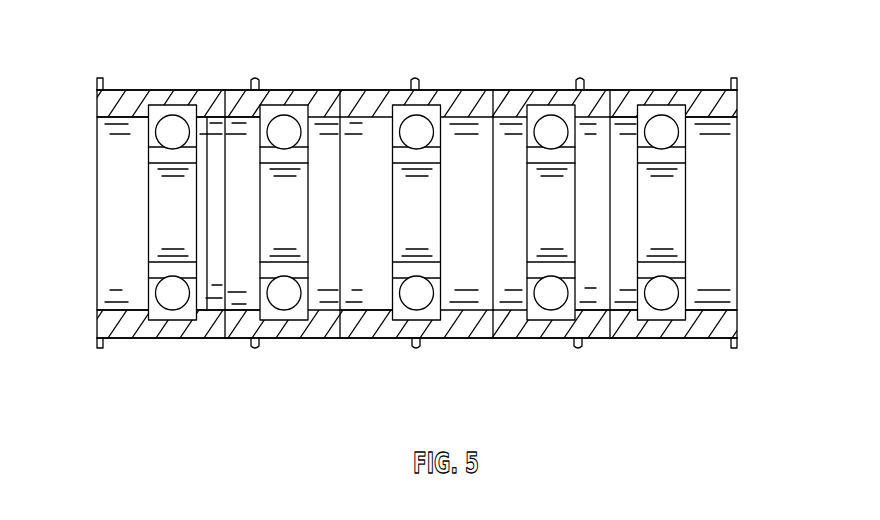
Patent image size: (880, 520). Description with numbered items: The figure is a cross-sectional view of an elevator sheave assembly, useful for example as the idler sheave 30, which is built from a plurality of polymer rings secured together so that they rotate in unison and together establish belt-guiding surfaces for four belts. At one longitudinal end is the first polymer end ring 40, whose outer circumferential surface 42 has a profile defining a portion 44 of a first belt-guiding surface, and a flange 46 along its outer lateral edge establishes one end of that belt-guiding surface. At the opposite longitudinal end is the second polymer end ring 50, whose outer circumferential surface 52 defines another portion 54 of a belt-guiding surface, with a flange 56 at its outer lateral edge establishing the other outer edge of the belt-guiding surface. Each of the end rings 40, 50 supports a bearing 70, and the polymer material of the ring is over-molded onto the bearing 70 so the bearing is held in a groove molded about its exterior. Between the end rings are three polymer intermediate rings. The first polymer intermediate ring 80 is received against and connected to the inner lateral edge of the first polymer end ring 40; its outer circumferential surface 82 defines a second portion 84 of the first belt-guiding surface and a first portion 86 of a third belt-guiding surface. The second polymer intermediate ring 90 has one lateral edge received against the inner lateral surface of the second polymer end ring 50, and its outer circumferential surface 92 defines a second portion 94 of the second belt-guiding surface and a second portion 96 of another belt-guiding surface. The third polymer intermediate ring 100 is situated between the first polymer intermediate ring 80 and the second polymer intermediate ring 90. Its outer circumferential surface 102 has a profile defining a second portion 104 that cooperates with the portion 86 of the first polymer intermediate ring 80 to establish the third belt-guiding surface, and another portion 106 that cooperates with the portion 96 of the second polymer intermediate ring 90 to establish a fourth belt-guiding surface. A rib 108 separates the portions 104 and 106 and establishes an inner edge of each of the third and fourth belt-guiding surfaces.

The idler sheave 30 is at (94, 22).
The first polymer end ring 40 is at (94, 269).
The outer circumferential surface 42 is at (130, 342).
The portion of belt-guiding surface 44 is at (150, 90).
The flange 46 is at (97, 80).
The second polymer end ring 50 is at (743, 157).
The outer circumferential surface 52 is at (687, 341).
The portion of belt-guiding surface 54 is at (685, 90).
The flange 56 is at (736, 342).
The bearing 70 is at (413, 309).
The first polymer intermediate ring 80 is at (247, 313).
The outer circumferential surface 82 is at (295, 341).
The second portion of first belt-guiding surface 84 is at (240, 90).
The first portion of third belt-guiding surface 86 is at (312, 90).
The second polymer intermediate ring 90 is at (588, 313).
The outer circumferential surface 92 is at (540, 341).
The second portion of second belt-guiding surface 94 is at (600, 90).
The second portion of third belt-guiding surface 96 is at (542, 90).
The third polymer intermediate ring 100 is at (369, 311).
The outer circumferential surface 102 is at (448, 342).
The second portion 104 is at (381, 90).
The portion of outer surface 106 is at (462, 90).
The rib 108 is at (419, 82).